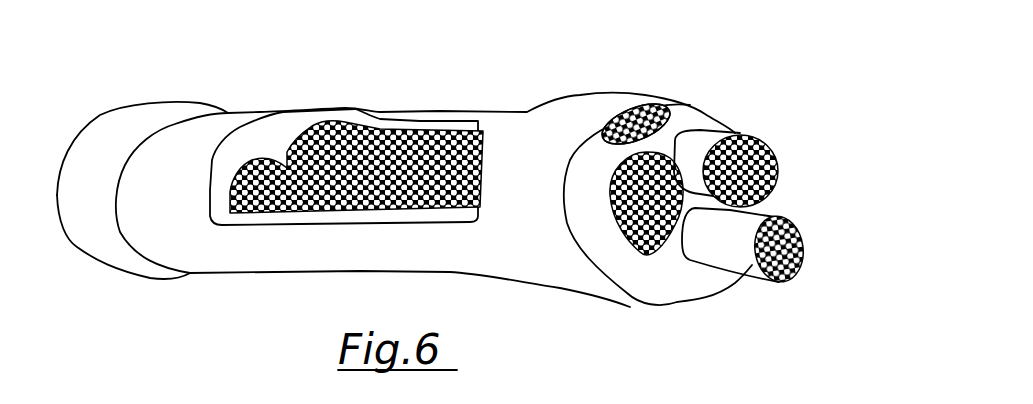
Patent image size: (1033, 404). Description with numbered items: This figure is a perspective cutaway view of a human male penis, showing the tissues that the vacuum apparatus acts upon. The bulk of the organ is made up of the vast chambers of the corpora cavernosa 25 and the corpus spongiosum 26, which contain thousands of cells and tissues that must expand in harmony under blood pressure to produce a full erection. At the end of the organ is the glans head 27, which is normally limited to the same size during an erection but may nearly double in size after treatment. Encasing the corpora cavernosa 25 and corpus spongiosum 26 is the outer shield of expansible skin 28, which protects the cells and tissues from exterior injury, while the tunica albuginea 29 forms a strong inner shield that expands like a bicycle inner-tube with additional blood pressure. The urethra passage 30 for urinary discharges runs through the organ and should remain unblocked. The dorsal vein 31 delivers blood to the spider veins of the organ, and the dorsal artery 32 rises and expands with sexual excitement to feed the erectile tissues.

The corpora cavernosa 25 is at (400, 187).
The corpus spongiosum 26 is at (800, 235).
The glans head 27 is at (120, 130).
The outer shield of expansible skin 28 is at (682, 283).
The tunica albuginea 29 is at (343, 220).
The urethra passage 30 is at (793, 258).
The dorsal vein 31 is at (628, 118).
The dorsal artery 32 is at (650, 110).